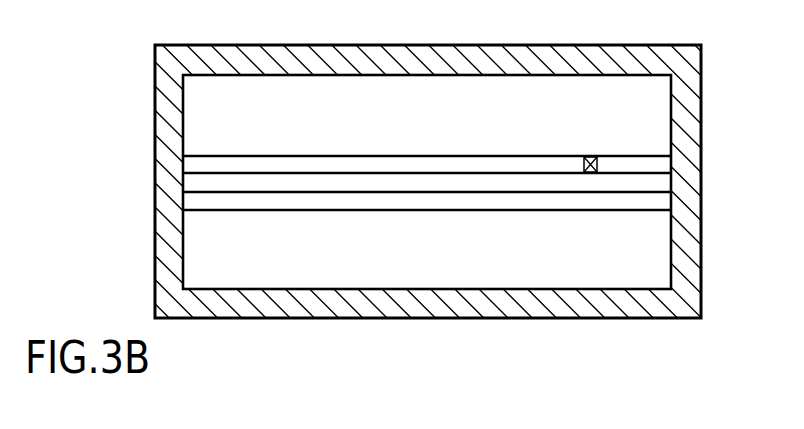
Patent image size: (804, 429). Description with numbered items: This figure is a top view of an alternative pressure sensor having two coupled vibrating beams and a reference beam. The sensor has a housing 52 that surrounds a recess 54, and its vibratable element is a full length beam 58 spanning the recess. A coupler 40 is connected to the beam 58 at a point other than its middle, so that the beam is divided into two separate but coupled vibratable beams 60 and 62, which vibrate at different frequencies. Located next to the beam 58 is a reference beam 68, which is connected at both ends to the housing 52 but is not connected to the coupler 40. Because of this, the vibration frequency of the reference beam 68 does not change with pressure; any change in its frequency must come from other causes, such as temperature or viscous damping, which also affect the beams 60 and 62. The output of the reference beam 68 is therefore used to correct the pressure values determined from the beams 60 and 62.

The housing 52 is at (153, 177).
The recess 54 is at (268, 246).
The full length beam 58 is at (453, 136).
The vibratable beam 60 is at (262, 155).
The vibratable beam 62 is at (643, 165).
The coupler 40 is at (591, 156).
The reference beam 68 is at (577, 212).